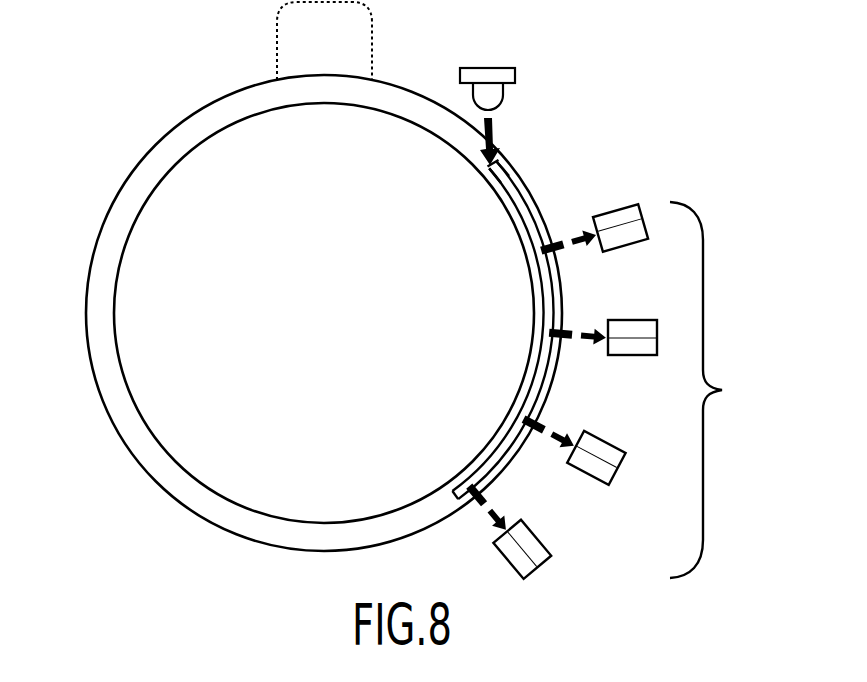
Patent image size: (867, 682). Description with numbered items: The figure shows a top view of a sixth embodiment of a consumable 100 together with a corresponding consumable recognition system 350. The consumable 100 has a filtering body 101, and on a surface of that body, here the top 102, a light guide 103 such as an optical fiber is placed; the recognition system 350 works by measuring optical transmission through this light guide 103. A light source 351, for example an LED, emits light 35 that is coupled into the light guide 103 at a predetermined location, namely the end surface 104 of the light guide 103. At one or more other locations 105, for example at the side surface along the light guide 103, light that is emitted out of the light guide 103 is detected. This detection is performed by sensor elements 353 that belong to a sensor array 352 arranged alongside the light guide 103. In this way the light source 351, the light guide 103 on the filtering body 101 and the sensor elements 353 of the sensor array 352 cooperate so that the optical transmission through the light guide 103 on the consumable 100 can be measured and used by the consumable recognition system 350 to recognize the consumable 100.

The consumable recognition system 350 is at (668, 76).
The light source 351 is at (491, 68).
The light 35 is at (494, 127).
The consumable 100 is at (146, 526).
The filtering body 101 is at (157, 145).
The top 102 is at (240, 142).
The light guide 103 is at (542, 200).
The end surface 104 is at (498, 160).
The other locations 105 is at (535, 424).
The sensor array 352 is at (619, 390).
The sensor elements 353 is at (618, 478).